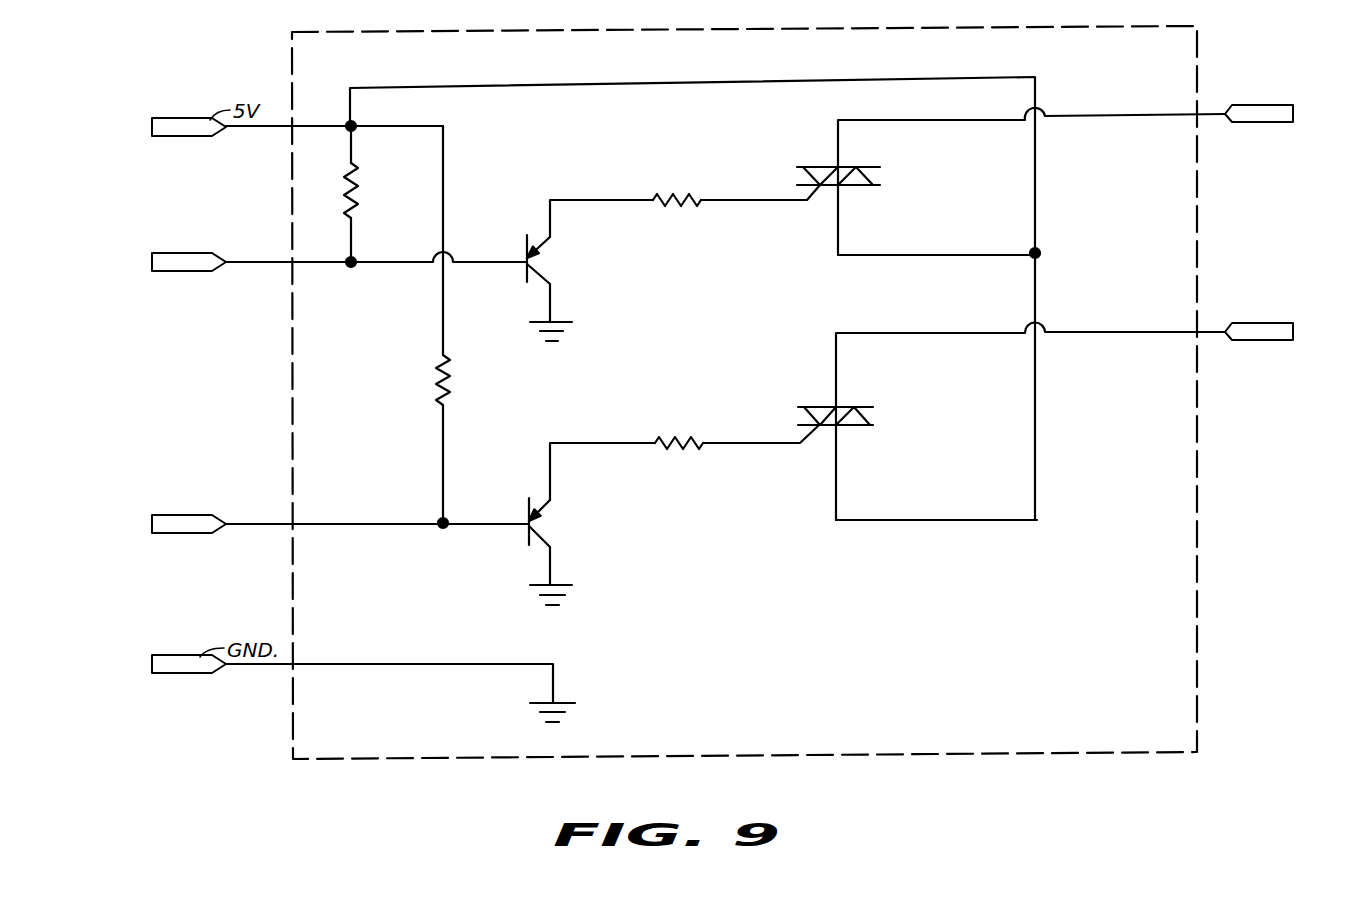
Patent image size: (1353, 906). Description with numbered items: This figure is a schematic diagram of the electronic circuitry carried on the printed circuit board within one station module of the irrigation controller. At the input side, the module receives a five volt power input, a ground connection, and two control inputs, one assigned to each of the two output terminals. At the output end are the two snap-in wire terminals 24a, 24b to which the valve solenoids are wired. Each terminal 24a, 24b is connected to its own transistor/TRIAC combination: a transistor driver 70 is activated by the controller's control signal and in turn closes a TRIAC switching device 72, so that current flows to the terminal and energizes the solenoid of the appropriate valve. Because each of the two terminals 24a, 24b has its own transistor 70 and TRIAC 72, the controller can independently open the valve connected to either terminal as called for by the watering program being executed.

The transistor driver 70 is at (524, 254).
The TRIAC switching device 72 is at (790, 176).
The snap-in wire terminal 24a is at (1258, 323).
The snap-in wire terminal 24b is at (1258, 105).